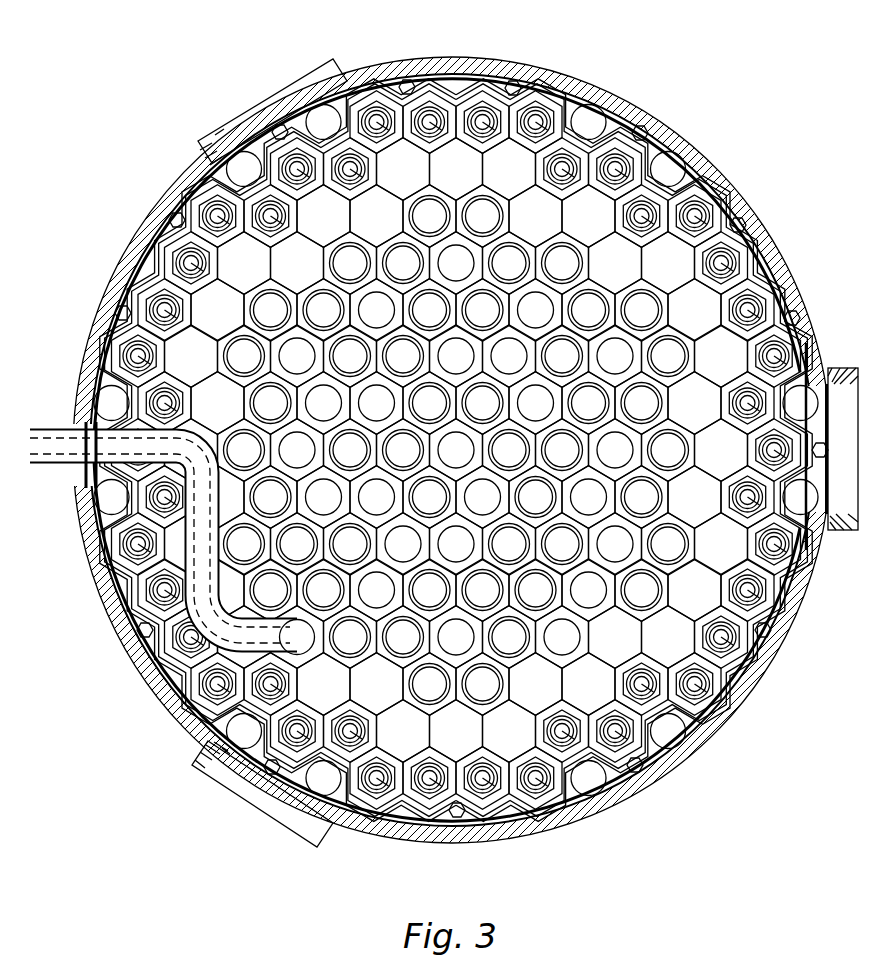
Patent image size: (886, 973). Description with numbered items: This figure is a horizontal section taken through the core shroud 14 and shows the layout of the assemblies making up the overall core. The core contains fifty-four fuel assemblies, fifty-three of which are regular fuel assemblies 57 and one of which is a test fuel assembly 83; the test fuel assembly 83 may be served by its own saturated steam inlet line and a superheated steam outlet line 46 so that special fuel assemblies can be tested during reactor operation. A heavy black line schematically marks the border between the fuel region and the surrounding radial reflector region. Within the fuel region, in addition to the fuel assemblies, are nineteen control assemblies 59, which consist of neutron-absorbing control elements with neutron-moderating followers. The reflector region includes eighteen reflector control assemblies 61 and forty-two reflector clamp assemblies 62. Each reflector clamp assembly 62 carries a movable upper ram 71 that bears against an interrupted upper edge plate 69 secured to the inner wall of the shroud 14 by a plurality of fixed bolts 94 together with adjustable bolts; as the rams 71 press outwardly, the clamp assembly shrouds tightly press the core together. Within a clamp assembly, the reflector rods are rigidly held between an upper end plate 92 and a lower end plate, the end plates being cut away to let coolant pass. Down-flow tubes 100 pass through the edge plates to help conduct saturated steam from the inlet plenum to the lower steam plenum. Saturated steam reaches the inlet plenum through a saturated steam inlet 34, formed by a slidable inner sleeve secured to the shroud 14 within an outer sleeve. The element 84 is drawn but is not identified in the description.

The shroud 14 is at (736, 716).
The saturated steam inlet 34 is at (323, 831).
The superheated steam outlet line 46 is at (46, 428).
The regular fuel assembly 57 is at (440, 200).
The control assembly 59 is at (288, 364).
The reflector control assembly 61 is at (206, 320).
The reflector clamp assembly 62 is at (464, 60).
The upper edge plate 69 is at (807, 301).
The upper ram 71 is at (752, 254).
The test fuel assembly 83 is at (473, 505).
The pipe outlet 84 is at (303, 652).
The upper end plate 92 is at (719, 170).
The fixed bolt 94 is at (752, 218).
The down-flow tube 100 is at (213, 737).